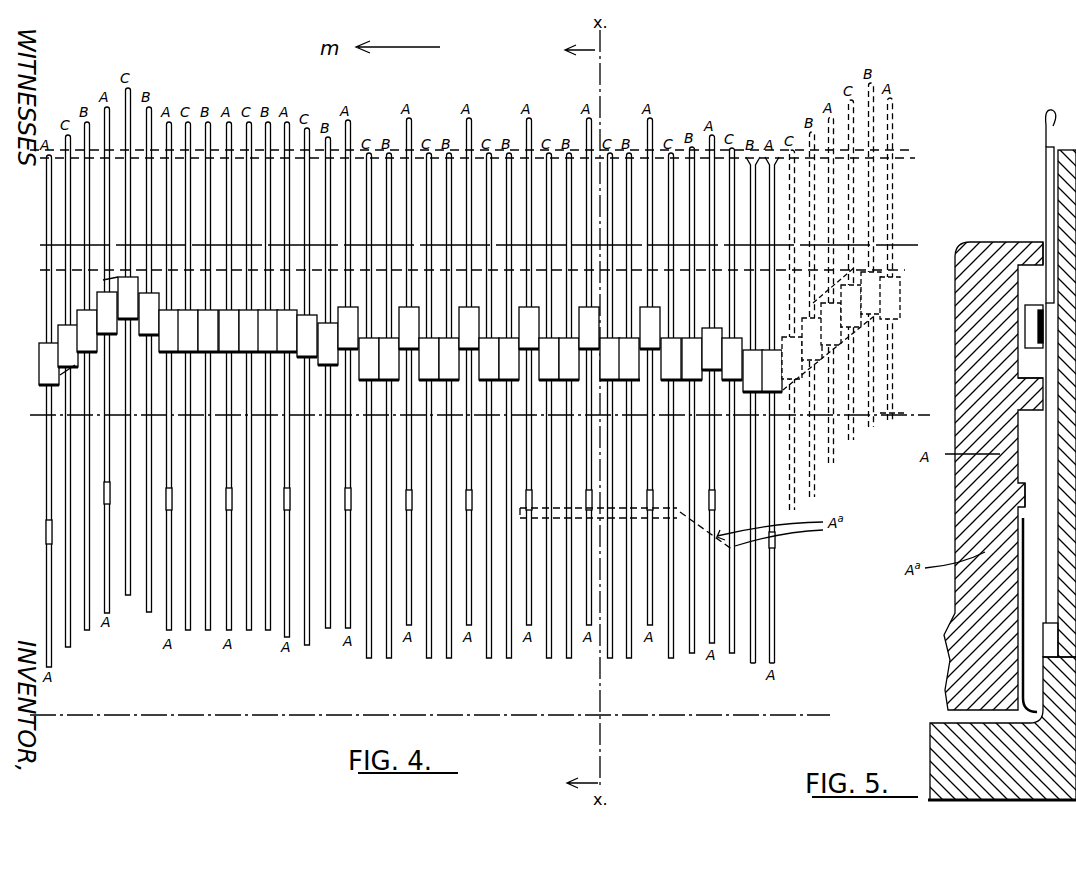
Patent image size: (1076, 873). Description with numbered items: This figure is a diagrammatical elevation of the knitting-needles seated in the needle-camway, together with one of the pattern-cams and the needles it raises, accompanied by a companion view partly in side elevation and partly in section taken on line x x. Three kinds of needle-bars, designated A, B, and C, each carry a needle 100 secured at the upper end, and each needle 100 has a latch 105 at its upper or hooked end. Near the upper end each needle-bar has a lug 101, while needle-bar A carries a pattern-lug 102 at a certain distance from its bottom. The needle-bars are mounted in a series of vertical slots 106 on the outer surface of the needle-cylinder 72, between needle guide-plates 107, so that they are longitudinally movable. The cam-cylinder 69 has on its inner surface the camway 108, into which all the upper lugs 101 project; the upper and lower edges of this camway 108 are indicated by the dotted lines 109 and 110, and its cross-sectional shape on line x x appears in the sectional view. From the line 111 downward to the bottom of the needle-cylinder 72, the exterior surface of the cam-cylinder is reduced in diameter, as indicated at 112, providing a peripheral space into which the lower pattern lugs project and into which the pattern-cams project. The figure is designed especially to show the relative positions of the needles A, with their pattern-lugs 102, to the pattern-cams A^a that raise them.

In FIG. 5, the cam-cylinder 69 is at (995, 593).
In FIG. 5, the needle-cylinder 72 is at (955, 538).
In FIG. 5, the needle 100 is at (1045, 231).
In FIG. 4, the lug 101 is at (469, 329).
In FIG. 5, the lug 101 is at (1030, 331).
In FIG. 4, the pattern-lug 102 is at (46, 533).
In FIG. 5, the pattern-lug 102 is at (1040, 496).
In FIG. 5, the latch 105 is at (1045, 150).
In FIG. 5, the vertical slot 106 is at (1050, 640).
In FIG. 5, the needle guide-plate 107 is at (1046, 208).
In FIG. 5, the camway 108 is at (1030, 366).
In FIG. 4, the upper edge line of camway 109 is at (103, 280).
In FIG. 4, the lower edge line of camway 110 is at (62, 373).
In FIG. 4, the line 111 is at (915, 409).
In FIG. 5, the reduced-diameter portion 112 is at (1030, 428).